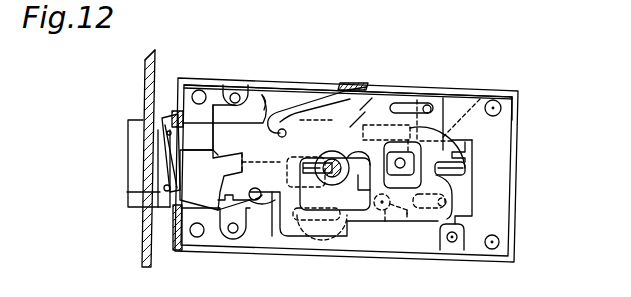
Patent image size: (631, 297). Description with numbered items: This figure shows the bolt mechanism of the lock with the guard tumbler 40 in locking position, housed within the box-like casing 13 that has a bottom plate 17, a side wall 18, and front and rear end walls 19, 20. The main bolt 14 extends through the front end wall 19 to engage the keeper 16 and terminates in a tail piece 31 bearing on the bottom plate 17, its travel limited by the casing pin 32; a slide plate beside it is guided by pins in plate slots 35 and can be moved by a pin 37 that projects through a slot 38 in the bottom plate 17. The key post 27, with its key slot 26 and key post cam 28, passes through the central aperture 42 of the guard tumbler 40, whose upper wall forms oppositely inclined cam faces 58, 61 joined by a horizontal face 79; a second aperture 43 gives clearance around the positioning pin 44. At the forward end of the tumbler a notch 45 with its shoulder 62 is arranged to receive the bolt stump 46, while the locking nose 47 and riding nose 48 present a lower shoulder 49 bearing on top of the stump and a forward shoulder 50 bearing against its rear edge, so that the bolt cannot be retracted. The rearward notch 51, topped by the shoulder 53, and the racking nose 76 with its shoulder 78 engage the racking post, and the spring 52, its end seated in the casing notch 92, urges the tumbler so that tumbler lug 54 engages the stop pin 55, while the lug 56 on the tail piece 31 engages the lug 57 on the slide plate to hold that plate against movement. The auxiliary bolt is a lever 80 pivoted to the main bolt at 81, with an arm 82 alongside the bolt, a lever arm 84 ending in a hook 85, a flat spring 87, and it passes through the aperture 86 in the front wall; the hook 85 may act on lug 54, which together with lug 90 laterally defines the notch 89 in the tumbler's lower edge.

The casing 13 is at (526, 100).
The main bolt 14 is at (128, 130).
The keeper 16 is at (141, 228).
The bottom plate 17 is at (492, 206).
The side wall 18 is at (440, 90).
The front end wall 19 is at (176, 112).
The rear end wall 20 is at (514, 185).
The key slot 26 is at (313, 163).
The key post 27 is at (330, 157).
The key post cam 28 is at (308, 190).
The tail piece 31 is at (277, 97).
The casing pin 32 is at (436, 106).
The plate slots 35 is at (462, 138).
The pin 37 is at (410, 205).
The slot 38 is at (407, 218).
The guard tumbler 40 is at (350, 127).
The central aperture 42 is at (351, 213).
The aperture 43 is at (461, 122).
The positioning pin 44 is at (400, 158).
The notch 45 is at (227, 167).
The bolt stump 46 is at (197, 150).
The locking nose 47 is at (211, 133).
The riding nose 48 is at (211, 180).
The lower shoulder 49 is at (204, 167).
The forward shoulder 50 is at (212, 159).
The notch 51 is at (440, 174).
The spring 52 is at (304, 98).
The shoulder 53 is at (455, 141).
The tumbler lug 54 is at (246, 208).
The stop pin 55 is at (273, 208).
The lug 56 is at (480, 98).
The lug 57 is at (418, 100).
The cam face 58 is at (317, 153).
The cam face 61 is at (358, 158).
The shoulder 62 is at (246, 160).
The racking nose 76 is at (453, 153).
The shoulder 78 is at (465, 160).
The horizontal face 79 is at (360, 110).
The lever 80 is at (164, 188).
The pivot 81 is at (158, 190).
The arm 82 is at (157, 117).
The lever arm 84 is at (178, 211).
The hook 85 is at (247, 183).
The aperture 86 is at (177, 112).
The flat spring 87 is at (168, 152).
The notch 89 is at (245, 202).
The lug 90 is at (238, 185).
The casing notch 92 is at (353, 83).